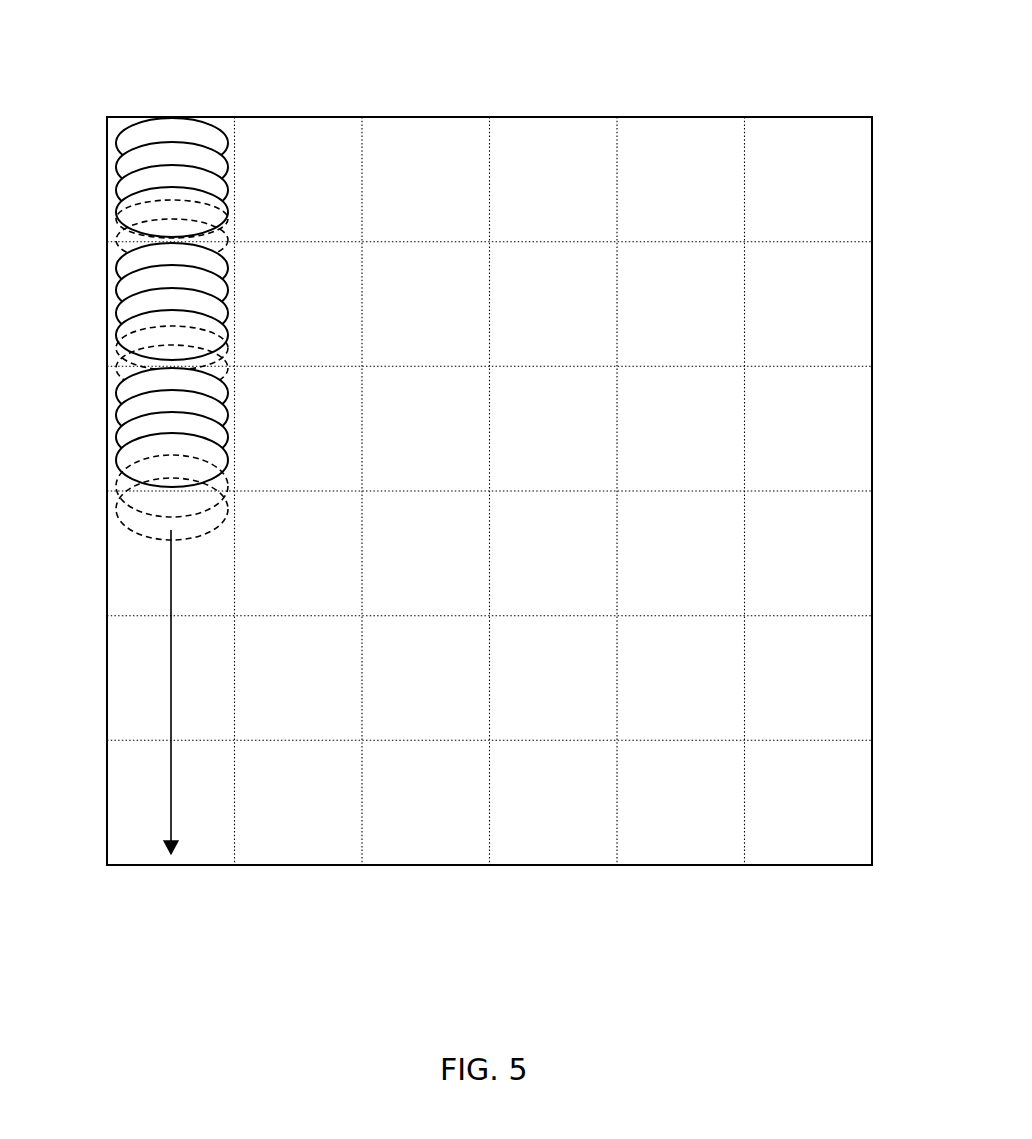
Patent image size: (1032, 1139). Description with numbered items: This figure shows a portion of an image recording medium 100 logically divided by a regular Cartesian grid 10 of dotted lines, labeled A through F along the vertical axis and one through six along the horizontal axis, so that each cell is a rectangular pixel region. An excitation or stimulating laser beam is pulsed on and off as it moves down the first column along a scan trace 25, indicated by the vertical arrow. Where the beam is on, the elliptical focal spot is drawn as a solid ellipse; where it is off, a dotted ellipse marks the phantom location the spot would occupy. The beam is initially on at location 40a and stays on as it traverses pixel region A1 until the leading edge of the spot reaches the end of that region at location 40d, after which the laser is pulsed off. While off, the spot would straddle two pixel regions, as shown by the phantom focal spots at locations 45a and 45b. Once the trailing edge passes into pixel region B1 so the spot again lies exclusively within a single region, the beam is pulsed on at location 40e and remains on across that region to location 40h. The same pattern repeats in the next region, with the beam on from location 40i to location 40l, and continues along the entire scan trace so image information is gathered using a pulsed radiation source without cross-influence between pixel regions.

The Cartesian grid 10 is at (872, 155).
The image recording medium 100 is at (130, 113).
The scan trace 25 is at (172, 689).
The focal spot location 40a is at (227, 145).
The focal spot location 40d is at (228, 208).
The focal spot location 40e is at (230, 263).
The focal spot location 40h is at (230, 337).
The focal spot location 40i is at (230, 395).
The focal spot location 40l is at (230, 460).
The phantom focal spot location 45a is at (116, 230).
The phantom focal spot location 45b is at (117, 250).